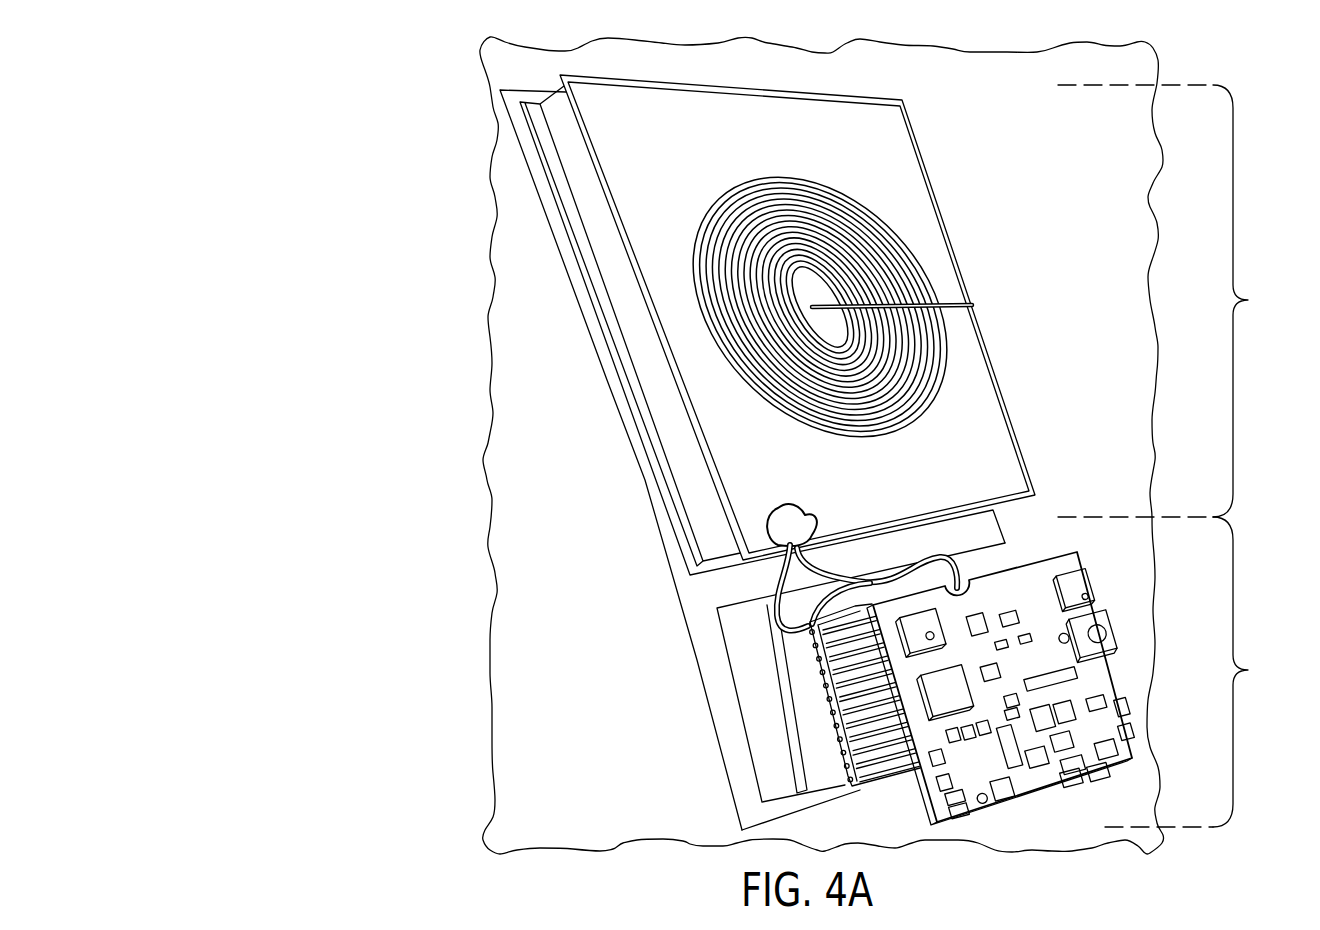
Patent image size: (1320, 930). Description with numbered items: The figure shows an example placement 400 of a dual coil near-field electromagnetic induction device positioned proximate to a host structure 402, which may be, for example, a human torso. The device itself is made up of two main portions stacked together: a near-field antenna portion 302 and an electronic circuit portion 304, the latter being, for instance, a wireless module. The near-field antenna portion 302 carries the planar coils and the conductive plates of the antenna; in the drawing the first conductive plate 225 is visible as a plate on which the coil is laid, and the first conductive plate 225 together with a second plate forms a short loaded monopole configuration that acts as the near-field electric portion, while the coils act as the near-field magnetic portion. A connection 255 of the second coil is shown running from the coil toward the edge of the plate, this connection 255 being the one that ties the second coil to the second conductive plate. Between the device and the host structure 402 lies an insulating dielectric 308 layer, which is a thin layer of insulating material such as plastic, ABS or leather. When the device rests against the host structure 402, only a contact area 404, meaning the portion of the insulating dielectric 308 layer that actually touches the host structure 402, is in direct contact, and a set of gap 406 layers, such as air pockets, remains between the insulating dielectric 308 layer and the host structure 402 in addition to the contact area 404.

The example placement 400 is at (224, 110).
The host structure 402 is at (512, 790).
The contact area 404 is at (635, 484).
The gap layers 406 is at (555, 264).
The insulating dielectric layer 308 is at (532, 176).
The near-field antenna portion 302 is at (1176, 301).
The electronic circuit portion 304 is at (1200, 672).
The first conductive plate 225 is at (628, 153).
The connection of the second coil 255 is at (980, 302).